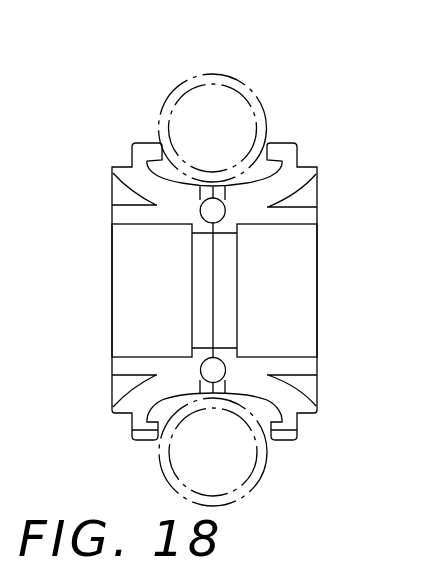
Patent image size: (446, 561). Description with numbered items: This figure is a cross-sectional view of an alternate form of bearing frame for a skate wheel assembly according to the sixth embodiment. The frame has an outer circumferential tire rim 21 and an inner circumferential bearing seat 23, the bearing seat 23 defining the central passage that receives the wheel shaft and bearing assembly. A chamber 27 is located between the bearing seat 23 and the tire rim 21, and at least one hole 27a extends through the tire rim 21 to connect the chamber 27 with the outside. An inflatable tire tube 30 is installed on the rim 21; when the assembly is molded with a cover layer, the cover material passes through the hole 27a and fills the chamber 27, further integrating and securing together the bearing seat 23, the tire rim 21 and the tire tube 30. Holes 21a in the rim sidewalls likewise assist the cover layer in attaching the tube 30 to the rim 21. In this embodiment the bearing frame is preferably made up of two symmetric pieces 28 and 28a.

The tire rim 21 is at (120, 178).
The holes 21a is at (296, 424).
The bearing seat 23 is at (293, 217).
The chamber 27 is at (217, 372).
The hole 27a is at (207, 192).
The symmetric piece 28 is at (120, 286).
The symmetric piece 28a is at (293, 273).
The tire tube 30 is at (177, 90).